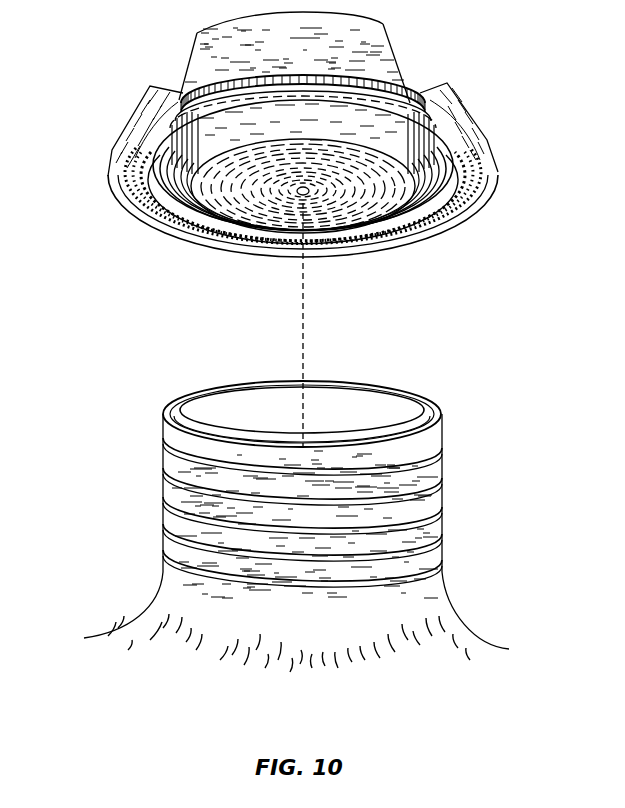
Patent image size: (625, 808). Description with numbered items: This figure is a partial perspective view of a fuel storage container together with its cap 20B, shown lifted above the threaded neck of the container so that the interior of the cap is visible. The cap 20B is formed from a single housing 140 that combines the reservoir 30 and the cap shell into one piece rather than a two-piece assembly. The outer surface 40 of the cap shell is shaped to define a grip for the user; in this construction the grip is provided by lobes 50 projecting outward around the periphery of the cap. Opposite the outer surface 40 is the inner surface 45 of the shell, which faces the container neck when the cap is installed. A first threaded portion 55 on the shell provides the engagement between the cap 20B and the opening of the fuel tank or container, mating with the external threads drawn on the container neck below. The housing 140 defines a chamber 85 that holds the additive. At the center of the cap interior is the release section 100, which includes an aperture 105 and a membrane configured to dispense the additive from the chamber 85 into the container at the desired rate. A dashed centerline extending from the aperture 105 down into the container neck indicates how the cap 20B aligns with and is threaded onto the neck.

The cap 20B is at (153, 62).
The reservoir 30 is at (270, 22).
The outer surface 40 is at (352, 22).
The chamber 85 is at (357, 118).
The housing 140 is at (443, 97).
The lobes 50 is at (121, 197).
The first threaded portion 55 is at (158, 235).
The inner surface 45 is at (457, 227).
The release section 100 is at (285, 250).
The aperture 105 is at (306, 198).